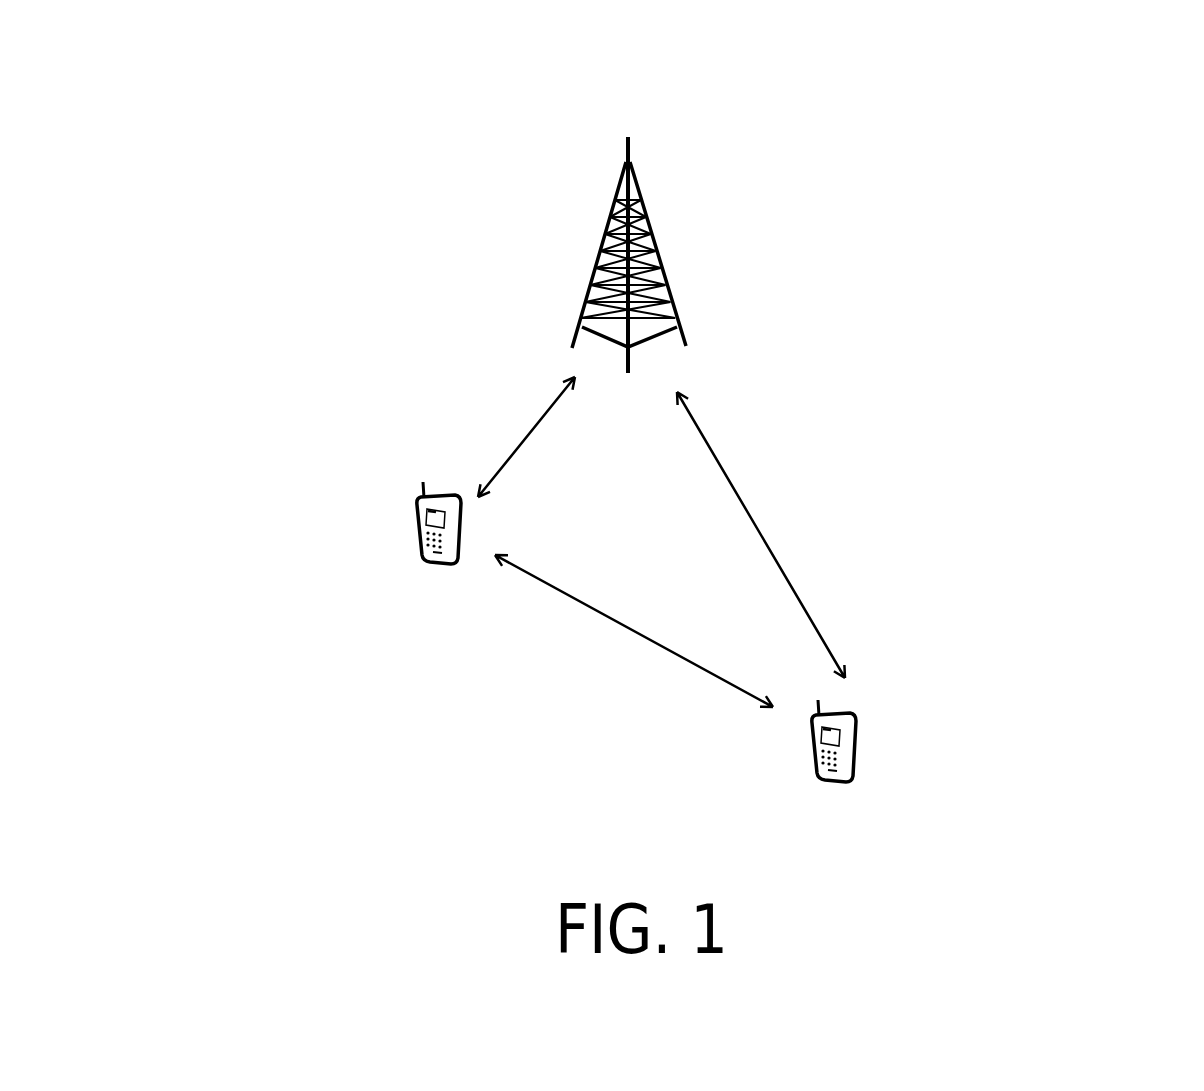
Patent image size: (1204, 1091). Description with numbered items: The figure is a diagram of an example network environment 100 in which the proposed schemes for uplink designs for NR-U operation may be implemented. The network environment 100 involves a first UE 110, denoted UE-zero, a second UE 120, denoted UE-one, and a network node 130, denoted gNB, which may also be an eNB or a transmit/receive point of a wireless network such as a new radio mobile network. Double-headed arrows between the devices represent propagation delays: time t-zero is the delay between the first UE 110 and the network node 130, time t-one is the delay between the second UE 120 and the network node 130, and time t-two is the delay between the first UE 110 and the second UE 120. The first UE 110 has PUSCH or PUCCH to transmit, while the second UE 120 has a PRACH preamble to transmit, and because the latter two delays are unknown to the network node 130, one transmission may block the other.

The network environment 100 is at (630, 74).
The network node 130 is at (610, 238).
The second UE 120 is at (427, 485).
The first UE 110 is at (842, 720).